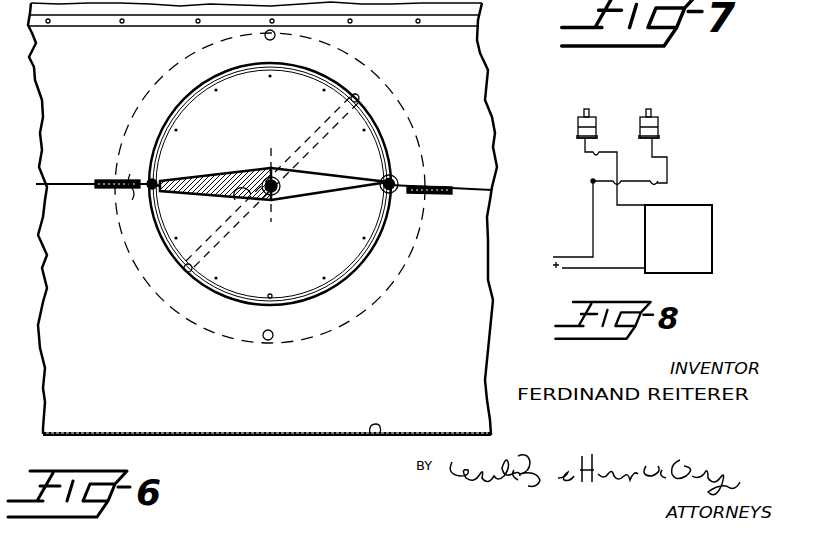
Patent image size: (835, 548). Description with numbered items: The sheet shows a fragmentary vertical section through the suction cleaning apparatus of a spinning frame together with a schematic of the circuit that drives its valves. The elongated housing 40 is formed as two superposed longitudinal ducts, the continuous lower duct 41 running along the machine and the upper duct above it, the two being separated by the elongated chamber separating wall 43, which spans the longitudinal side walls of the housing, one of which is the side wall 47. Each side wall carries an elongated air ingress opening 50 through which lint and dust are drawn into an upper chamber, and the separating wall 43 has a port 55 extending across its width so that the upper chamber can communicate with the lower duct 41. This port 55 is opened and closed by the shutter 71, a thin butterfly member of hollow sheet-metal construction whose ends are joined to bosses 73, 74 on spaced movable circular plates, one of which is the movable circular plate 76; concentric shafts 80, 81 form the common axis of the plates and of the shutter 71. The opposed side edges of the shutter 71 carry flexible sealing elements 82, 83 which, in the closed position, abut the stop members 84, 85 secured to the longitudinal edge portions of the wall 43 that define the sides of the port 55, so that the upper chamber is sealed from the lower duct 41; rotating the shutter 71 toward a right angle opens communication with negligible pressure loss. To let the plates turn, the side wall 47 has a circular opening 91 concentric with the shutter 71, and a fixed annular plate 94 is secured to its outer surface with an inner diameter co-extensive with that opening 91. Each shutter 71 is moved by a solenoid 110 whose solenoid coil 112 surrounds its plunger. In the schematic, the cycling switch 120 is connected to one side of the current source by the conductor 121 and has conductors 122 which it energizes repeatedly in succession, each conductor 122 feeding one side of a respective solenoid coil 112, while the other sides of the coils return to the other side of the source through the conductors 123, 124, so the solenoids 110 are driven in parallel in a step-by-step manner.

In FIG. 6, the elongated housing 40 is at (302, 435).
In FIG. 6, the lower duct 41 is at (378, 436).
In FIG. 6, the chamber separating wall 43 is at (64, 182).
In FIG. 6, the side wall 47 is at (426, 328).
In FIG. 6, the air ingress opening 50 is at (108, 12).
In FIG. 6, the port 55 is at (118, 196).
In FIG. 6, the shutter 71 is at (246, 170).
In FIG. 6, the boss 73 is at (212, 176).
In FIG. 6, the boss 74 is at (348, 184).
In FIG. 6, the movable circular plate 76 is at (296, 107).
In FIG. 6, the shaft 80 is at (232, 200).
In FIG. 6, the shaft 81 is at (280, 183).
In FIG. 6, the sealing element 82 is at (356, 96).
In FIG. 6, the sealing element 83 is at (150, 188).
In FIG. 6, the stop member 84 is at (398, 188).
In FIG. 6, the stop member 85 is at (132, 176).
In FIG. 6, the circular opening 91 is at (194, 100).
In FIG. 6, the fixed plate 94 is at (406, 108).
In FIG. 8, the solenoid 110 is at (578, 123).
In FIG. 8, the solenoid coil 112 is at (588, 118).
In FIG. 8, the cycling switch 120 is at (712, 240).
In FIG. 8, the conductor 121 is at (640, 268).
In FIG. 8, the conductor 122 is at (658, 184).
In FIG. 8, the conductor 123 is at (667, 164).
In FIG. 8, the conductor 124 is at (592, 206).